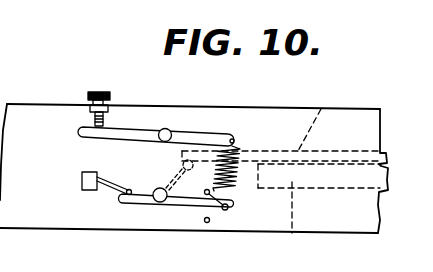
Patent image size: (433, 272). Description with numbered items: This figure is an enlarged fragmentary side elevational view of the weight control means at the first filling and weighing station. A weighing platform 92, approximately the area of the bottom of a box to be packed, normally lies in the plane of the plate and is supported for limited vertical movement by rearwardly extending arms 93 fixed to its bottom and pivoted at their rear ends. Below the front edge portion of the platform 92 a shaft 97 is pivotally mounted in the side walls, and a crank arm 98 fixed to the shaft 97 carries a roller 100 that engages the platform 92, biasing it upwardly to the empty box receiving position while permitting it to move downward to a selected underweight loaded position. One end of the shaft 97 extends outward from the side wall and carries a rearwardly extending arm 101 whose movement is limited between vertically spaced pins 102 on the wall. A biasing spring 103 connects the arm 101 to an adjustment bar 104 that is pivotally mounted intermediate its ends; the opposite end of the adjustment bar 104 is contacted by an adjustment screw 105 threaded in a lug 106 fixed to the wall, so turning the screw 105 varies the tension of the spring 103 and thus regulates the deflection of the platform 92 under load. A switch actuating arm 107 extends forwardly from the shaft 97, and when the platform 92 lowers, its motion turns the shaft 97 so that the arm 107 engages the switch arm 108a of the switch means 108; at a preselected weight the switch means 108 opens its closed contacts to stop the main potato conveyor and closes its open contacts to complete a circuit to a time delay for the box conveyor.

The weighing platform 92 is at (323, 108).
The rearwardly extending arms 93 is at (293, 233).
The shaft 97 is at (157, 203).
The crank arm 98 is at (172, 177).
The roller 100 is at (180, 164).
The rearwardly extending arm 101 is at (190, 201).
The pins 102 is at (210, 220).
The biasing spring 103 is at (242, 158).
The adjustment bar 104 is at (229, 137).
The adjustment screw 105 is at (100, 92).
The lug 106 is at (90, 107).
The switch actuating arm 107 is at (125, 207).
The switch means 108 is at (82, 184).
The switch arm 108a is at (114, 190).